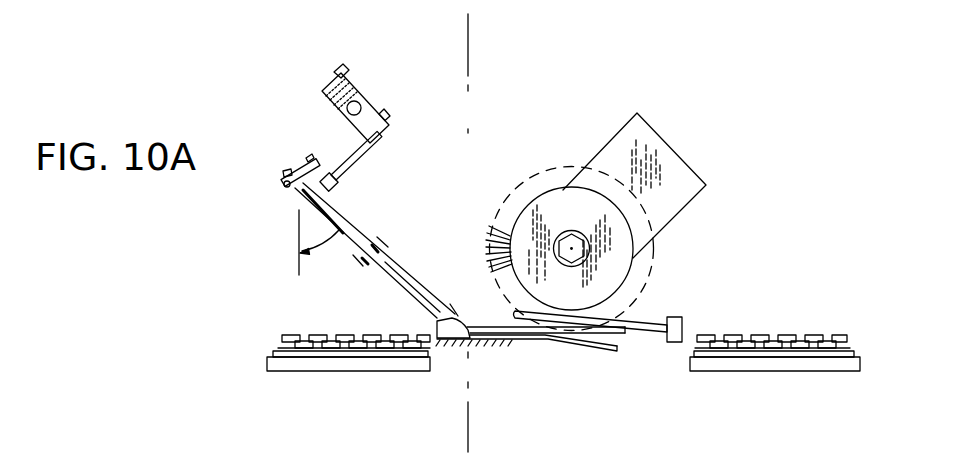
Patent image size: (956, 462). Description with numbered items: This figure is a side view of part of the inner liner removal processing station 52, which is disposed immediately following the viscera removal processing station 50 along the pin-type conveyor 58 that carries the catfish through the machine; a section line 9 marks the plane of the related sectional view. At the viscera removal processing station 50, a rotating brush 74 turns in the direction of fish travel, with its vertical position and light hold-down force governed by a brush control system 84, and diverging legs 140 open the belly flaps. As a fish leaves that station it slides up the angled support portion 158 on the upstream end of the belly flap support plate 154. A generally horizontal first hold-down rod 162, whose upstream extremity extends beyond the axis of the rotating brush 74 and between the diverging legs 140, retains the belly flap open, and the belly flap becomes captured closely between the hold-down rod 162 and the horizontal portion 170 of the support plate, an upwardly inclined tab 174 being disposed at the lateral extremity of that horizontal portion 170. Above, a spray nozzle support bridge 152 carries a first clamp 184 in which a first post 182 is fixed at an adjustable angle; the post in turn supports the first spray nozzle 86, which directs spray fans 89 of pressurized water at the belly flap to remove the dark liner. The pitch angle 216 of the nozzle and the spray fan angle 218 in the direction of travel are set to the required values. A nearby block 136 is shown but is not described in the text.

The section line 9- 9 is at (468, 44).
The viscera removal processing station 50 is at (597, 118).
The inner liner removal processing station 52 is at (438, 192).
The pin-type conveyor 58 is at (368, 306).
The rotating brush 74 is at (620, 258).
The brush control system 84 is at (676, 204).
The first spray nozzle 86 is at (302, 192).
The spray fans 89 is at (442, 282).
The stop block 136 is at (681, 322).
The diverging legs 140 is at (643, 318).
The spray nozzle support bridge 152 is at (340, 110).
The belly flap support plate 154 is at (510, 342).
The angled support portion 158 is at (597, 352).
The first hold-down rod 162 is at (610, 333).
The horizontal portion 170 is at (498, 332).
The upwardly inclined tab 174 is at (442, 317).
The first post 182 is at (352, 152).
The first clamp 184 is at (370, 113).
The pitch angle 216 is at (322, 246).
The spray fan angle 218 is at (385, 253).